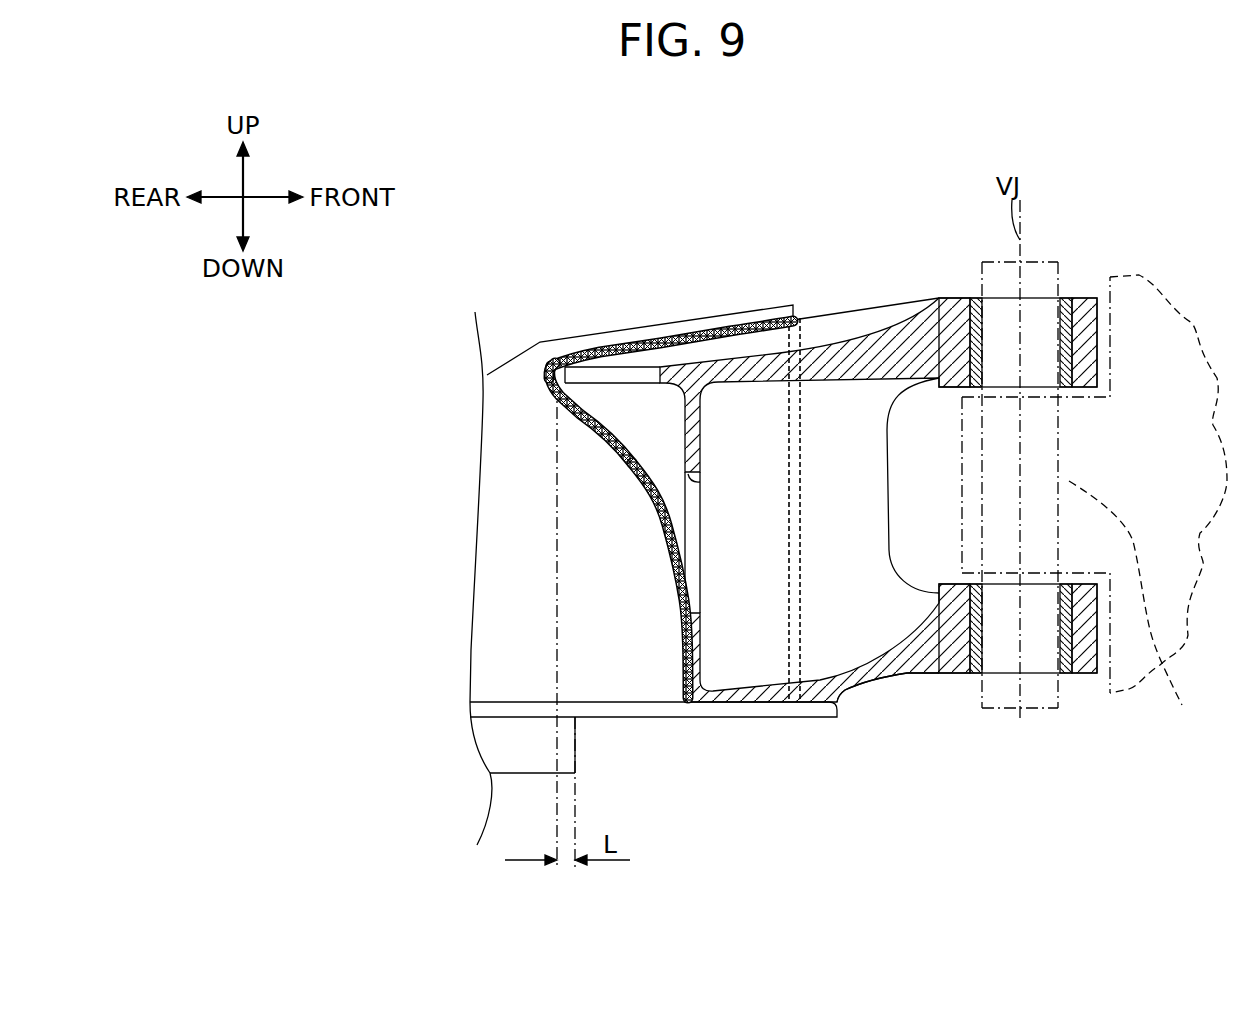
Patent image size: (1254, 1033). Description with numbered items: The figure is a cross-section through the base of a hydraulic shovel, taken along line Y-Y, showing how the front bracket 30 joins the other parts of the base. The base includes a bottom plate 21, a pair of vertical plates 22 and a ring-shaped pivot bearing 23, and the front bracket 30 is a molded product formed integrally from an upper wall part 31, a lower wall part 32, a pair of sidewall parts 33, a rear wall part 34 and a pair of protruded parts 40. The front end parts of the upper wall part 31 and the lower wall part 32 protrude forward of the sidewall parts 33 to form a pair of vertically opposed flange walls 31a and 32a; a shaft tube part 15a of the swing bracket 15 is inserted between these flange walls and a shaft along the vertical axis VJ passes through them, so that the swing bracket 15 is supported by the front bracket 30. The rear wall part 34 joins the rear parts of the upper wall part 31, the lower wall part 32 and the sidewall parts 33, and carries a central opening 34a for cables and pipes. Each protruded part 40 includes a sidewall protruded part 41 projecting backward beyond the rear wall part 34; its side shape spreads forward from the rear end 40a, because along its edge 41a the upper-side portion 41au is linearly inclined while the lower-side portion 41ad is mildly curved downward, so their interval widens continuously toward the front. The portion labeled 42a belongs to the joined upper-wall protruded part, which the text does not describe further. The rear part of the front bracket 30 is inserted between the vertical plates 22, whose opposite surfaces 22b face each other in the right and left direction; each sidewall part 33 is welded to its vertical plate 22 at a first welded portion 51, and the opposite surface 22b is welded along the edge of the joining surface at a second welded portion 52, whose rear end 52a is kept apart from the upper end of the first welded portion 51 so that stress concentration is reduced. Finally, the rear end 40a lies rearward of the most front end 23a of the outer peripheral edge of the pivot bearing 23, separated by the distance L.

The swing bracket 15 is at (1153, 298).
The shaft tube part 15a is at (1137, 607).
The bottom plate 21 is at (488, 708).
The vertical plates 22 is at (498, 478).
The opposite surfaces 22b is at (500, 383).
The pivot bearing 23 is at (536, 752).
The most front end 23a is at (575, 745).
The front bracket 30 is at (922, 290).
The upper wall part 31 is at (867, 328).
The flange wall 31a is at (1082, 308).
The lower wall part 32 is at (828, 692).
The flange wall 32a is at (953, 650).
The sidewall parts 33 is at (748, 420).
The rear wall part 34 is at (790, 587).
The opening 34a is at (705, 478).
The protruded parts 40 is at (541, 366).
The rear end 40a is at (456, 393).
The sidewall protruded part 41 is at (513, 468).
The edge 41a is at (501, 580).
The lower-side portion 41ad is at (501, 580).
The upper-side portion 41au is at (648, 345).
The flange 42a is at (603, 373).
The first welded portion 51 is at (805, 490).
The second welded portion 52 is at (634, 344).
The rear ends 52a is at (547, 373).